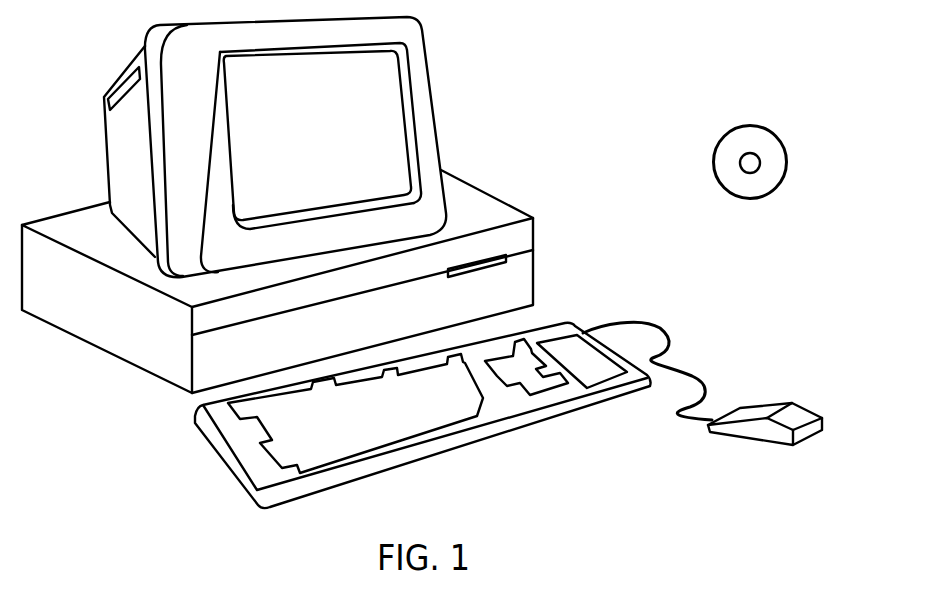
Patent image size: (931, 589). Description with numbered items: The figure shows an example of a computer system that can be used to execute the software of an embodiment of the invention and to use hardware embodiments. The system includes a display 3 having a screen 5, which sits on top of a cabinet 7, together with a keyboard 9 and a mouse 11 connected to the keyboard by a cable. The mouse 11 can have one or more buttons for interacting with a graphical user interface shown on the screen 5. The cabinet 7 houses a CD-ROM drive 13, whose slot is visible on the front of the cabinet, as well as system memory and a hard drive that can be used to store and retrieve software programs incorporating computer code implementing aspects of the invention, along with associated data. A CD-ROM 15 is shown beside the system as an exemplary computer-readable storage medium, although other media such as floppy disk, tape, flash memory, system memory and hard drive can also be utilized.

The display 3 is at (436, 137).
The screen 5 is at (400, 90).
The cabinet 7 is at (148, 373).
The keyboard 9 is at (428, 462).
The mouse 11 is at (798, 406).
The CD-ROM drive 13 is at (507, 255).
The CD-ROM 15 is at (783, 141).